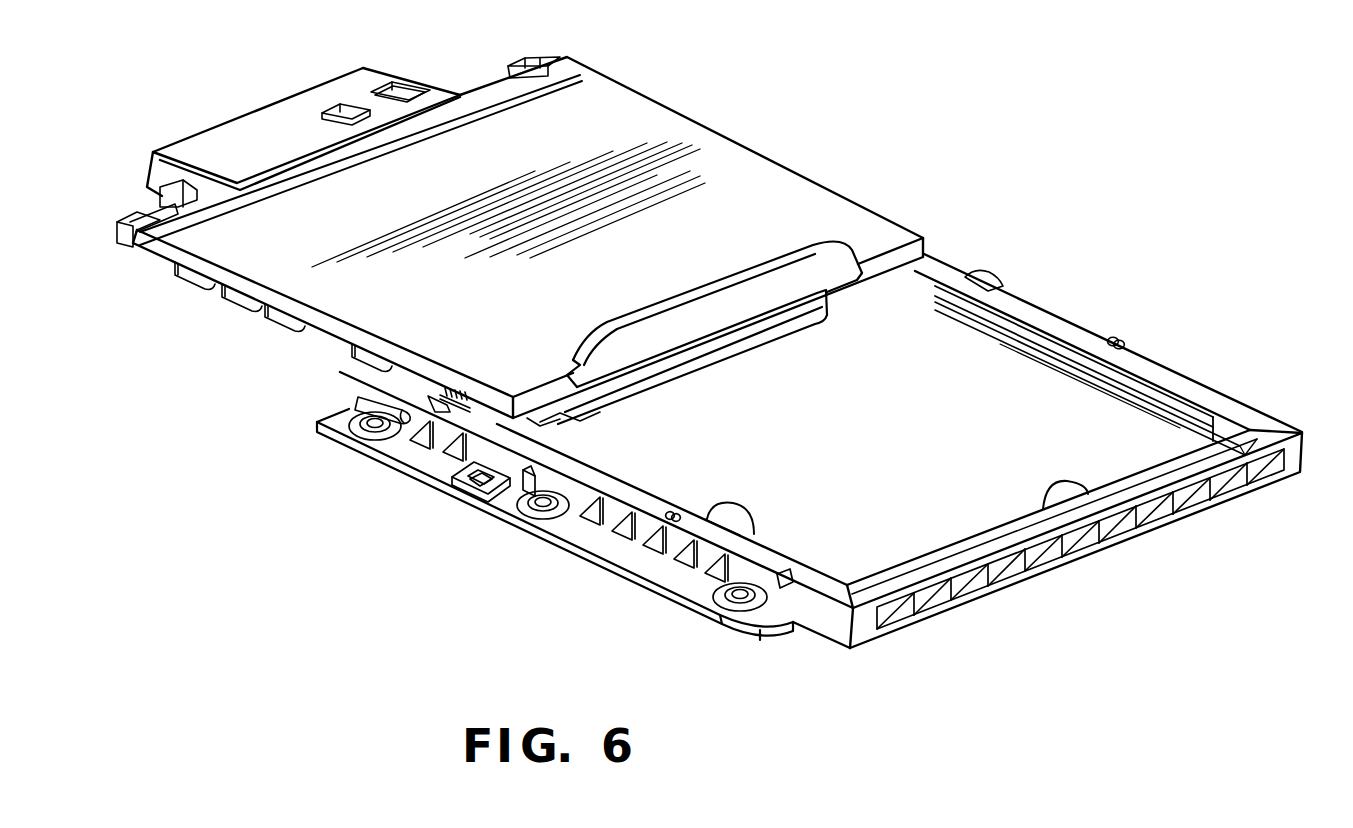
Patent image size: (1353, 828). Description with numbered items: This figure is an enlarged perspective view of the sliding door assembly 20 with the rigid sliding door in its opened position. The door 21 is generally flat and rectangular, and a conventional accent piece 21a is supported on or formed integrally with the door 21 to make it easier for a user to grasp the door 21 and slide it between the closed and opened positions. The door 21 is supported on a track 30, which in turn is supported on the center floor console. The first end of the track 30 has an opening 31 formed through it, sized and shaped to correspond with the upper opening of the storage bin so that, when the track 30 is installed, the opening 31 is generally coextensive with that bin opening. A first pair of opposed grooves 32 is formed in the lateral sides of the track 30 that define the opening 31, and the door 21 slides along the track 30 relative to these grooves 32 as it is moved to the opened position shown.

The sliding door assembly 20 is at (1037, 138).
The door 21 is at (700, 150).
The accent piece 21a is at (820, 265).
The track 30 is at (972, 585).
The opening 31 is at (1084, 480).
The first pair of opposed grooves 32 is at (1040, 345).